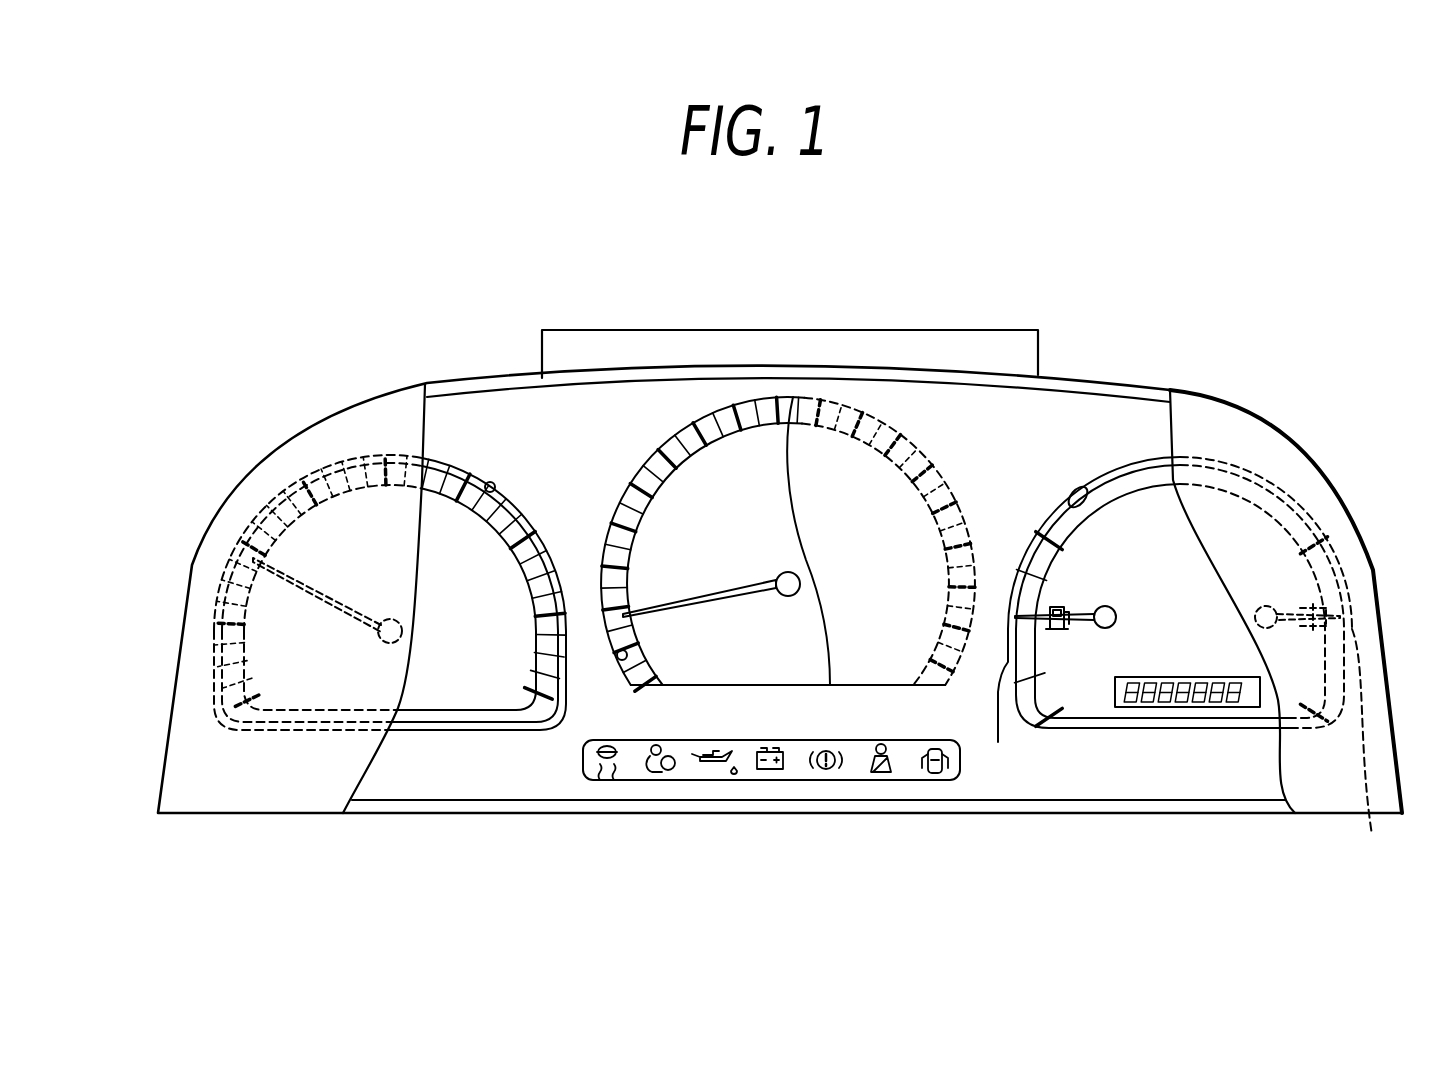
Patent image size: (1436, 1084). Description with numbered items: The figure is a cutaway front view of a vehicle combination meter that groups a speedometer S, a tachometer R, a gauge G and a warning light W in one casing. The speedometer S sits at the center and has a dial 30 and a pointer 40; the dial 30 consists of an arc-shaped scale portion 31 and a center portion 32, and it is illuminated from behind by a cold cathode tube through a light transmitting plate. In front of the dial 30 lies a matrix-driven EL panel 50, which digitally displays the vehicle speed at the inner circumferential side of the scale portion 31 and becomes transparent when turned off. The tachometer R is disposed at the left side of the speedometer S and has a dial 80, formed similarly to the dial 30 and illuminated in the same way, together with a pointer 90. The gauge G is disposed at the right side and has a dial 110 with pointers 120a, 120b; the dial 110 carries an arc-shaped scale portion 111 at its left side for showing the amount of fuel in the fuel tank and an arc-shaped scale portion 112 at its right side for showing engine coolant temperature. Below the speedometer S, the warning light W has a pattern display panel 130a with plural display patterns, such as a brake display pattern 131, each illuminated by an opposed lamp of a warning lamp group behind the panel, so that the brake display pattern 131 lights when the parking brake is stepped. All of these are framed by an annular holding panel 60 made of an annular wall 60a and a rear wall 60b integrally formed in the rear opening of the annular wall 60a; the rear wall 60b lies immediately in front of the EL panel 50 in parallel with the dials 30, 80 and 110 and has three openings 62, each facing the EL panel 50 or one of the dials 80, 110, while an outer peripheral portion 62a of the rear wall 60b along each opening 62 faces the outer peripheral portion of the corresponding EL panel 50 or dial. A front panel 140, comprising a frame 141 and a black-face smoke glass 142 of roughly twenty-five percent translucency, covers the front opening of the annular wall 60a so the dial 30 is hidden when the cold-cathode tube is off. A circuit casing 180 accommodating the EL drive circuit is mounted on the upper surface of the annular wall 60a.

The circuit casing 180 is at (693, 327).
The holding panel 60 is at (1252, 415).
The annular wall 60a is at (1093, 378).
The rear wall 60b is at (988, 412).
The speedometer S is at (785, 499).
The tachometer R is at (390, 672).
The gauge G is at (1165, 673).
The warning light W is at (771, 815).
The dial 30 is at (640, 455).
The scale portion 31 is at (620, 503).
The center portion 32 is at (743, 670).
The pointer 40 is at (697, 610).
The EL panel 50 is at (872, 508).
The opening 62 is at (493, 481).
The outer peripheral portion 62a is at (542, 517).
The dial 80 is at (466, 695).
The pointer 90 is at (346, 602).
The dial 110 is at (1096, 710).
The scale portion 111 is at (1165, 617).
The scale portion 112 is at (1378, 759).
The pointer 120a is at (1086, 610).
The pointer 120b is at (1285, 608).
The pattern display panel 130a is at (622, 782).
The brake display pattern 131 is at (826, 773).
The front panel 140 is at (271, 787).
The frame 141 is at (179, 633).
The smoke glass 142 is at (210, 782).